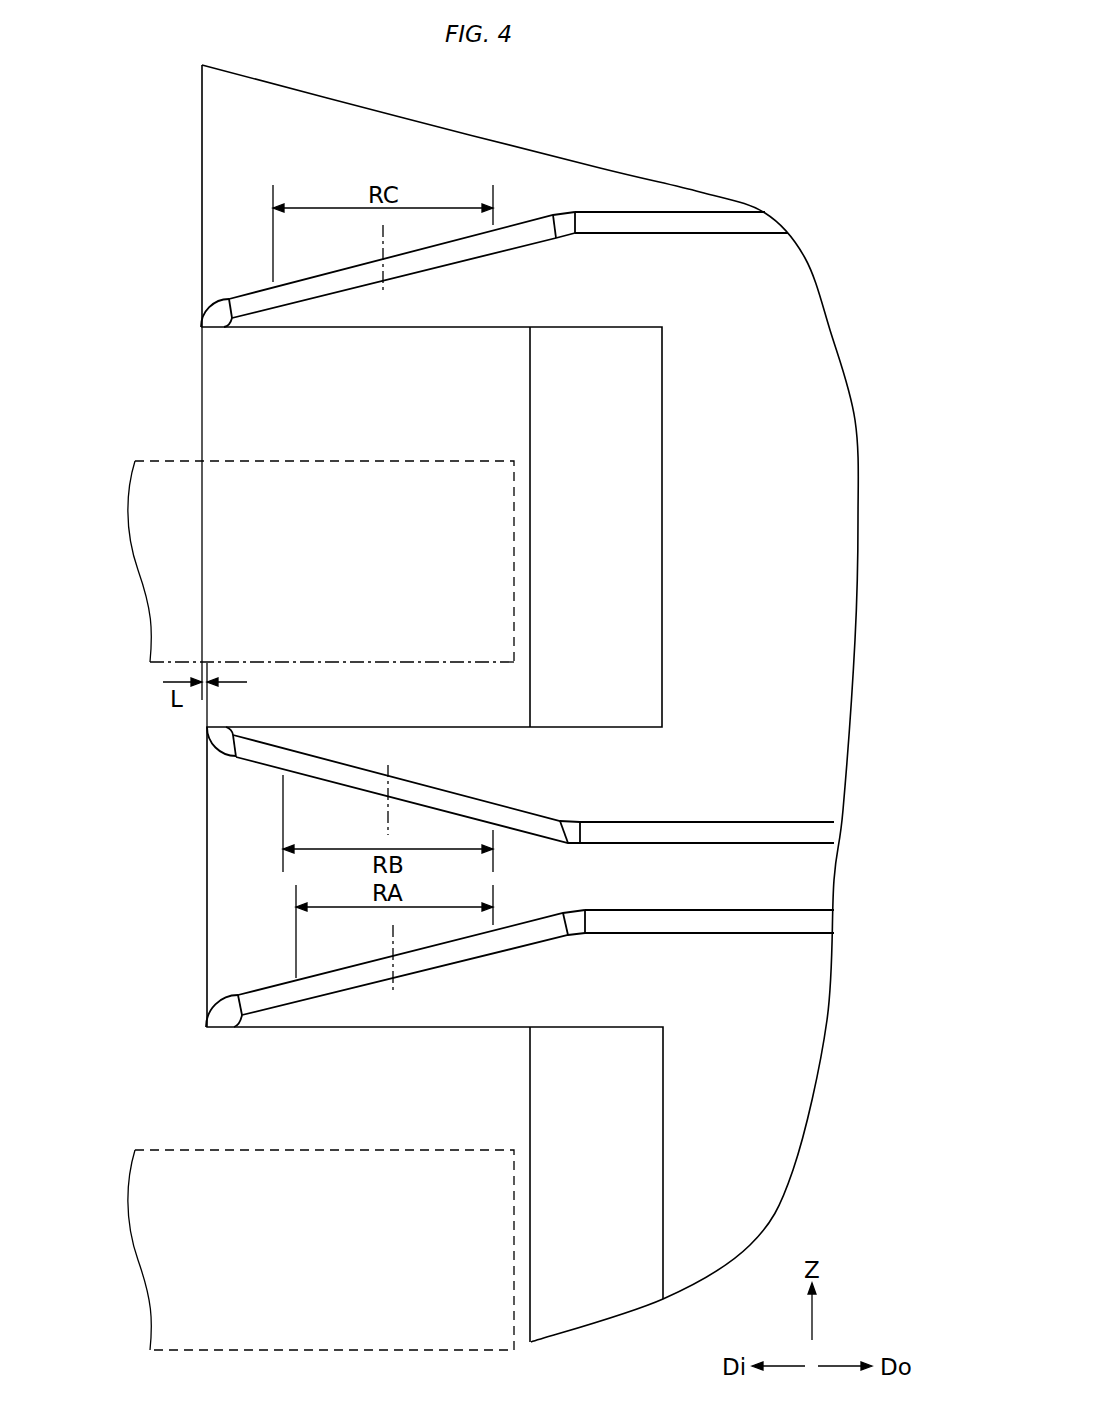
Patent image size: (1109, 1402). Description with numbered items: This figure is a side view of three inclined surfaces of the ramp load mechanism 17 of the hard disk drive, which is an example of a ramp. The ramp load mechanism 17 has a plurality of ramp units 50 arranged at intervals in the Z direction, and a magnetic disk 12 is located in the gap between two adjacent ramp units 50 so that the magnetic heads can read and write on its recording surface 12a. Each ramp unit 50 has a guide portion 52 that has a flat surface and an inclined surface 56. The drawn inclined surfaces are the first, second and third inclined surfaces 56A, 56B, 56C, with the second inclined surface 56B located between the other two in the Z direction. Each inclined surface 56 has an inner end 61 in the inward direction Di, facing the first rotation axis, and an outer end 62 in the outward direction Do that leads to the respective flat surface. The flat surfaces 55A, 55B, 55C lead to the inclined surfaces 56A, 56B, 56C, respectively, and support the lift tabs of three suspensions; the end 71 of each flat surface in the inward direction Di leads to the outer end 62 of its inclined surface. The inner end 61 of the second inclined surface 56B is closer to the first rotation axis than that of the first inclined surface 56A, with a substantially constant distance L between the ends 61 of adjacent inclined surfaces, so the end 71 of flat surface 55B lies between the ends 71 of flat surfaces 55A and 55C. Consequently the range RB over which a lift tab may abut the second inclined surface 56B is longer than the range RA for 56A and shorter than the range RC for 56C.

The ramp load mechanism 17 is at (838, 248).
The magnetic disk 12 is at (157, 461).
The recording surface 12a is at (152, 664).
The ramp unit 50 is at (728, 204).
The guide portion 52 is at (503, 549).
The inclined surface 56 is at (503, 549).
The first inclined surface 56A is at (503, 958).
The second inclined surface 56B is at (503, 811).
The third inclined surface 56C is at (506, 199).
The first flat surface 55A is at (727, 910).
The second flat surface 55B is at (786, 845).
The third flat surface 55C is at (680, 212).
The inner end of the inclined surface 61 is at (228, 299).
The outer end of the inclined surface 62 is at (553, 215).
The end of the flat surface 71 is at (575, 213).